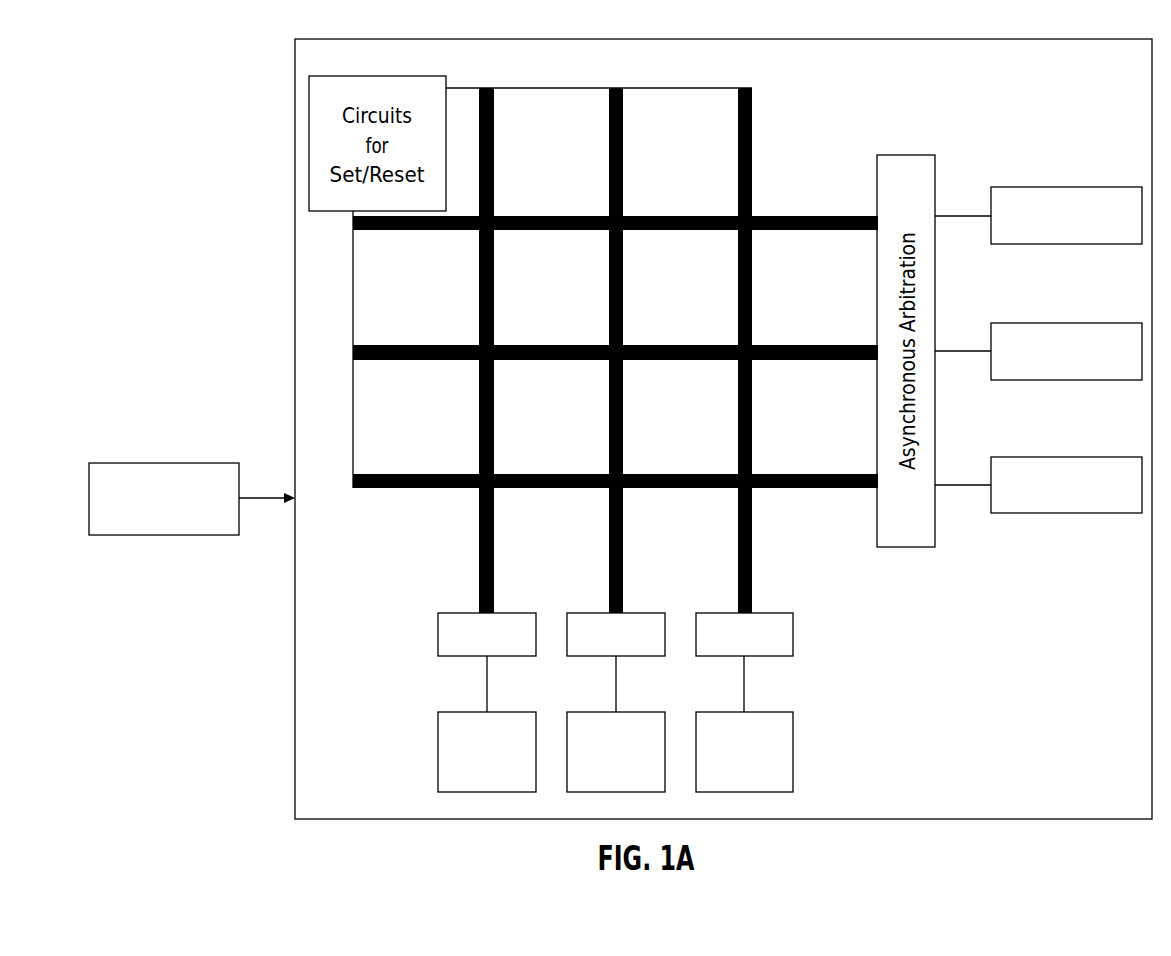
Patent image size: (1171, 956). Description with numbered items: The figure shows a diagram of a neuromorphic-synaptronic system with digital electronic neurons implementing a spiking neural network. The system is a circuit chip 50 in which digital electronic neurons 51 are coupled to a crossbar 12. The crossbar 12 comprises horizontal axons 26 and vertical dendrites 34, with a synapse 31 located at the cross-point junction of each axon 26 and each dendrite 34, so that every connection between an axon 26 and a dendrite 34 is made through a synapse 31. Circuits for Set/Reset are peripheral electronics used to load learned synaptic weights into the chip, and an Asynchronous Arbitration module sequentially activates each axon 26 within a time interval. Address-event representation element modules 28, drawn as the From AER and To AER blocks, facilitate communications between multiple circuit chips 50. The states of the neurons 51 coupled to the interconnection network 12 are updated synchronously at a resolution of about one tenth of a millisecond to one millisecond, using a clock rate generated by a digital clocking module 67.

The crossbar 12 is at (378, 559).
The circuit chip 50 is at (615, 329).
The axon 26 is at (590, 232).
The dendrite 34 is at (494, 300).
The synapse 31 is at (494, 231).
The digital electronic neuron 51 is at (793, 633).
The address-event representation (AER) element module 28 is at (1060, 513).
The digital clocking module 67 is at (185, 535).